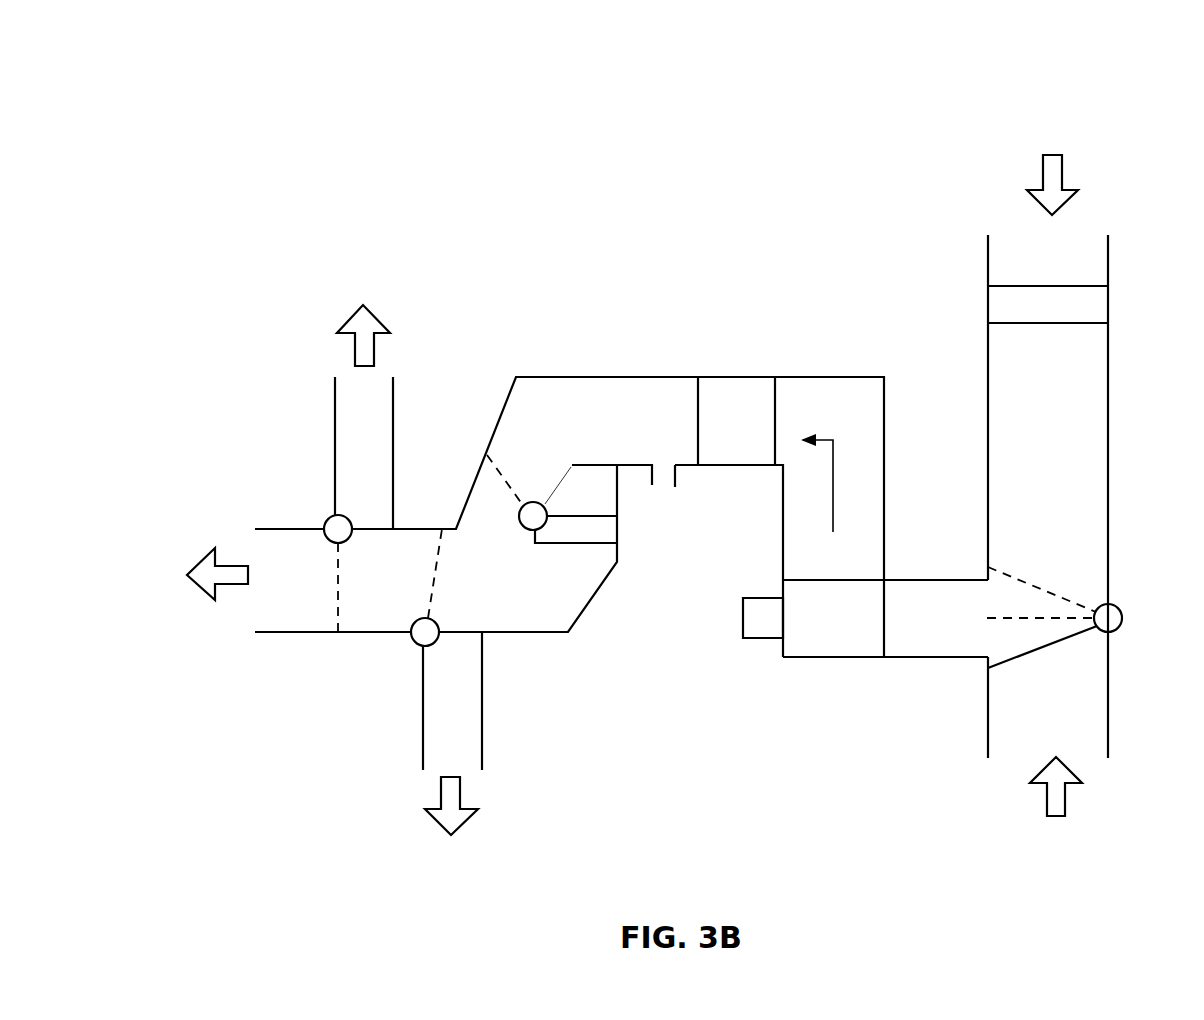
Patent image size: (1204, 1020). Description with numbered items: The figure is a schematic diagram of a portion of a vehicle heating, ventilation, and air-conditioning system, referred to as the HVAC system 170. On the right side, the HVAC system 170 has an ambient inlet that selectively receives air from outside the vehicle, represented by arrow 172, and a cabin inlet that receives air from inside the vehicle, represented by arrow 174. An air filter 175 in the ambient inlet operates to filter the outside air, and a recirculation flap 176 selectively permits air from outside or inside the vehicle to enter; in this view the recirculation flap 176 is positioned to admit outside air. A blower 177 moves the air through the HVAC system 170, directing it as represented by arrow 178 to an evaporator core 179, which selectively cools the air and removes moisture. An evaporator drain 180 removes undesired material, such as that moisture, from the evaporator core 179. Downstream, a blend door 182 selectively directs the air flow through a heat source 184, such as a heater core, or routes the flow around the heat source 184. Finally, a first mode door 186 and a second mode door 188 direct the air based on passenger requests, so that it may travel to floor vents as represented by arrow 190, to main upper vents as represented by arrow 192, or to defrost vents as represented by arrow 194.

The HVAC system 170 is at (975, 68).
The arrow 172 is at (1062, 168).
The arrow 174 is at (1058, 816).
The air filter 175 is at (1053, 286).
The recirculation flap 176 is at (1037, 650).
The blower 177 is at (837, 657).
The arrow 178 is at (833, 485).
The evaporator core 179 is at (766, 377).
The evaporator drain 180 is at (675, 478).
The blend door 182 is at (563, 484).
The heat source 184 is at (566, 545).
The first mode door 186 is at (458, 632).
The second mode door 188 is at (379, 528).
The arrow 190 is at (468, 818).
The arrow 192 is at (212, 552).
The arrow 194 is at (383, 318).